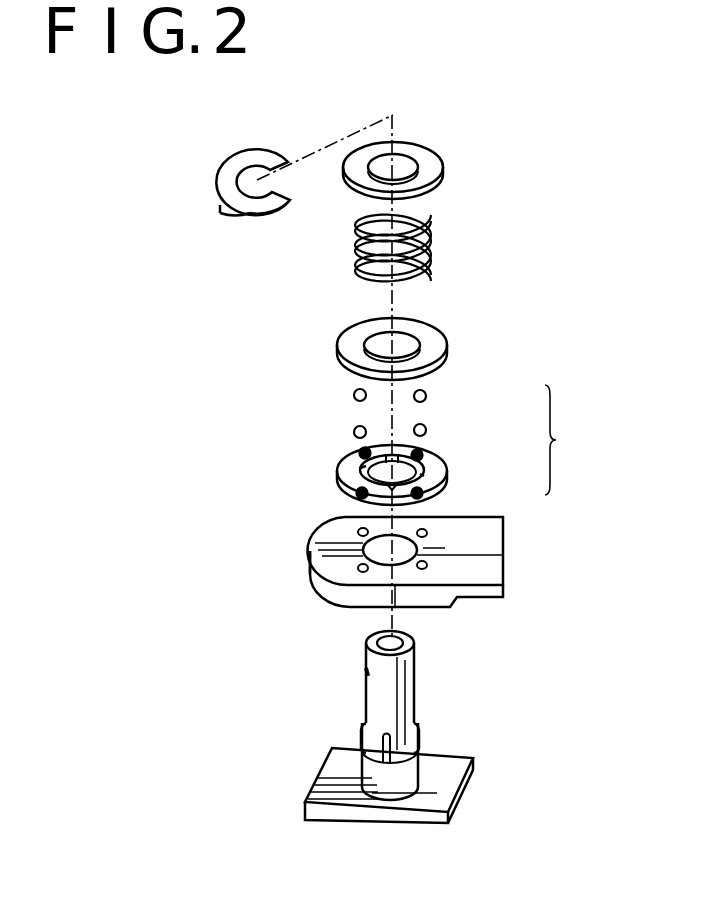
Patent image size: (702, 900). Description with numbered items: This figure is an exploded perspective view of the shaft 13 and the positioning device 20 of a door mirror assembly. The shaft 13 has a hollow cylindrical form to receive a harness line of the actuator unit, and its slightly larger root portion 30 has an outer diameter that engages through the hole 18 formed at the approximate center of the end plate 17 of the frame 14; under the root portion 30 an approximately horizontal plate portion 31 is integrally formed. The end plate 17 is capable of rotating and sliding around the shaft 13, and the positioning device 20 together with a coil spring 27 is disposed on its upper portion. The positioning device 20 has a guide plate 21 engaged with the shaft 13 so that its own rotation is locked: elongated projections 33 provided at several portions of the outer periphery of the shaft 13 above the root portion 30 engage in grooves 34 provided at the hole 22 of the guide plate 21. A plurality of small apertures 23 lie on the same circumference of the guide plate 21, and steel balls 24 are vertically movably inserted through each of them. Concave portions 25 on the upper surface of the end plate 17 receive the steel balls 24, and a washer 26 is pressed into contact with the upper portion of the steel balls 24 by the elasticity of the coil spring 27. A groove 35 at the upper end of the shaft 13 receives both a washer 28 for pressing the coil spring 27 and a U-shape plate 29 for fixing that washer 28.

The shaft 13 is at (418, 652).
The frame 14 is at (510, 570).
The end plate 17 is at (310, 566).
The hole 18 is at (348, 553).
The positioning device 20 is at (570, 440).
The guide plate 21 is at (446, 468).
The hole 22 is at (405, 481).
The small apertures 23 is at (358, 452).
The steel balls 24 is at (427, 398).
The concave portions 25 is at (428, 533).
The washer 26 is at (449, 346).
The coil spring 27 is at (422, 233).
The washer 28 is at (445, 163).
The U-shape plate 29 is at (240, 166).
The root portion 30 is at (420, 773).
The plate portion 31 is at (333, 795).
The elongated projections 33 is at (360, 740).
The grooves 34 is at (358, 469).
The groove 35 is at (364, 673).